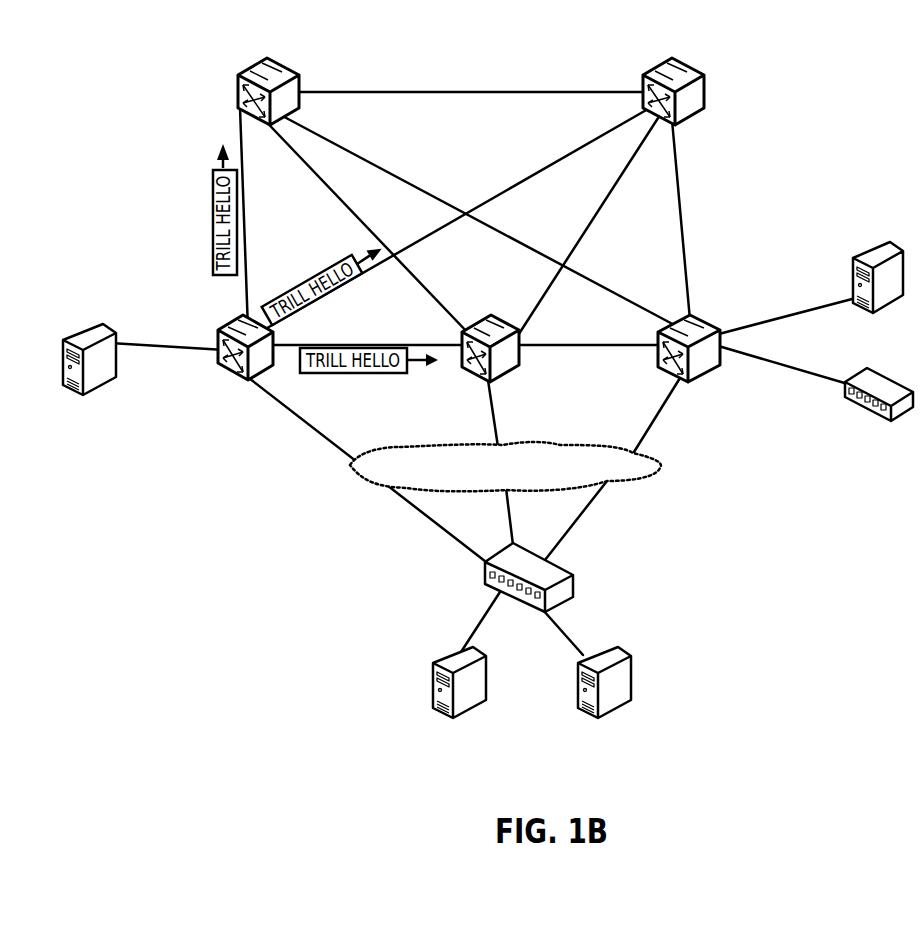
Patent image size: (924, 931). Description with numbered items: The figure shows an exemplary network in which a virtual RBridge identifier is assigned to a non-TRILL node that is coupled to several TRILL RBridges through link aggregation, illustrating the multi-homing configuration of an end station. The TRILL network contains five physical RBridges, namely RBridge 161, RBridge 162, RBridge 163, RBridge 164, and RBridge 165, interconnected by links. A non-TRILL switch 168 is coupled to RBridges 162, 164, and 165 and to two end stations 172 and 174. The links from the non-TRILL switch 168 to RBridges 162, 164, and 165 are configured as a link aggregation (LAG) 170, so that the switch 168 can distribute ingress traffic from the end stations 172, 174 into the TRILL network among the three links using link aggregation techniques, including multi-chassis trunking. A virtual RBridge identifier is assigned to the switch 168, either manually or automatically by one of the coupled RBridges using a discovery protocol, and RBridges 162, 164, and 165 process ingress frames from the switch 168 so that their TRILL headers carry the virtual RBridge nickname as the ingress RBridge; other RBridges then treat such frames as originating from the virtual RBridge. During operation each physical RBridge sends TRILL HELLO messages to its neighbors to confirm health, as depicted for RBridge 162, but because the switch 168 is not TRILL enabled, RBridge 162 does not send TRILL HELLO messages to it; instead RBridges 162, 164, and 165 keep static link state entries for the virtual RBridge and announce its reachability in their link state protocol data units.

The RBridge 161 is at (267, 60).
The RBridge 162 is at (233, 323).
The RBridge 163 is at (671, 62).
The RBridge 164 is at (475, 326).
The RBridge 165 is at (693, 318).
The non-TRILL switch 168 is at (575, 593).
The link aggregation (LAG) 170 is at (505, 466).
The end station 172 is at (434, 713).
The end station 174 is at (622, 699).